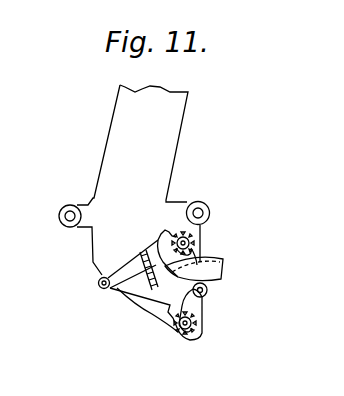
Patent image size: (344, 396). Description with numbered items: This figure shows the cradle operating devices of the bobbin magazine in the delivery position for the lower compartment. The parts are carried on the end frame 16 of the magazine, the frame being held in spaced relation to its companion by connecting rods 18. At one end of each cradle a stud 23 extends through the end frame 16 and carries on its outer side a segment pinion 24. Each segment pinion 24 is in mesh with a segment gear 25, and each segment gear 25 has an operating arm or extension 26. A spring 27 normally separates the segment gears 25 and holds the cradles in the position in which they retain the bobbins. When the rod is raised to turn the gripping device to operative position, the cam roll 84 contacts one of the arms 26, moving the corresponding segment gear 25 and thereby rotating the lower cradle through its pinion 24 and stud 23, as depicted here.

The end frame 16 is at (173, 127).
The connecting rods 18 is at (69, 220).
The stud 23 is at (192, 243).
The segment pinion 24 is at (186, 242).
The segment gear 25 is at (162, 234).
The operating arm 26 is at (226, 279).
The spring 27 is at (148, 280).
The cam roll 84 is at (208, 291).